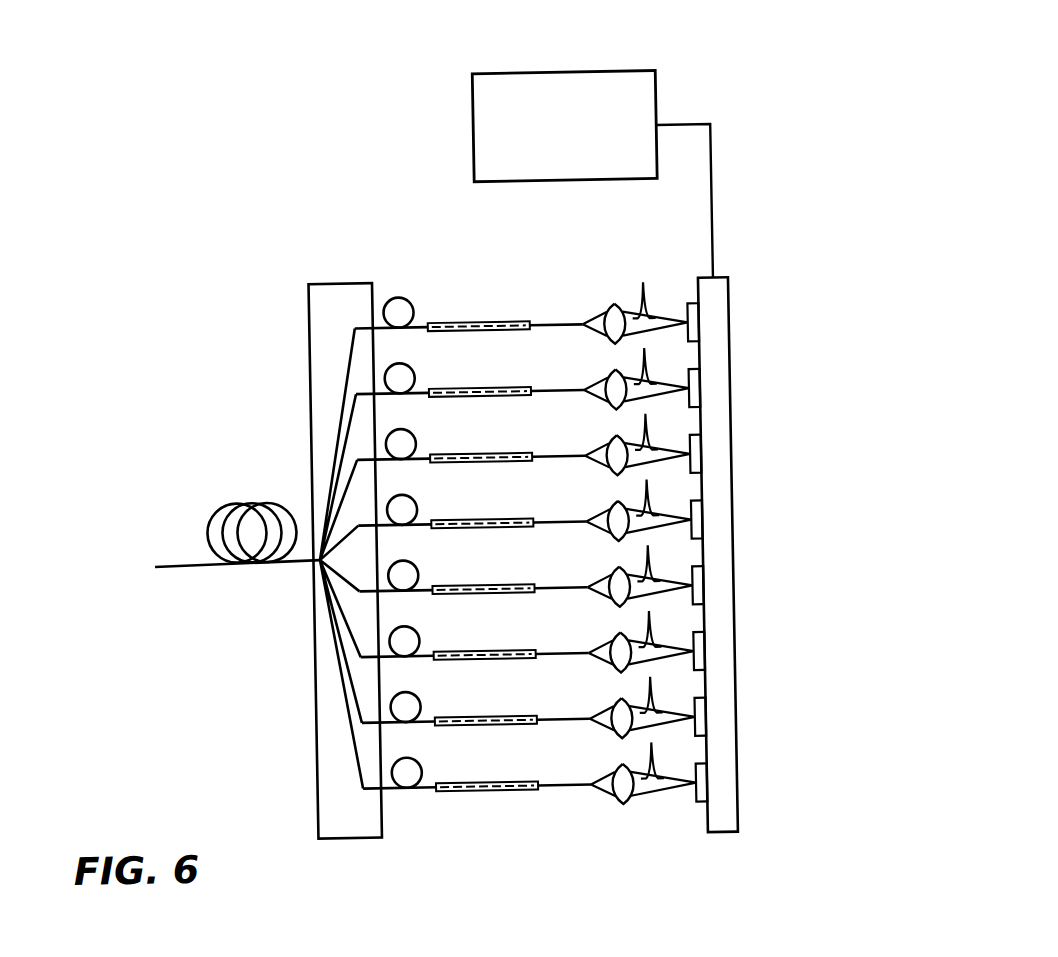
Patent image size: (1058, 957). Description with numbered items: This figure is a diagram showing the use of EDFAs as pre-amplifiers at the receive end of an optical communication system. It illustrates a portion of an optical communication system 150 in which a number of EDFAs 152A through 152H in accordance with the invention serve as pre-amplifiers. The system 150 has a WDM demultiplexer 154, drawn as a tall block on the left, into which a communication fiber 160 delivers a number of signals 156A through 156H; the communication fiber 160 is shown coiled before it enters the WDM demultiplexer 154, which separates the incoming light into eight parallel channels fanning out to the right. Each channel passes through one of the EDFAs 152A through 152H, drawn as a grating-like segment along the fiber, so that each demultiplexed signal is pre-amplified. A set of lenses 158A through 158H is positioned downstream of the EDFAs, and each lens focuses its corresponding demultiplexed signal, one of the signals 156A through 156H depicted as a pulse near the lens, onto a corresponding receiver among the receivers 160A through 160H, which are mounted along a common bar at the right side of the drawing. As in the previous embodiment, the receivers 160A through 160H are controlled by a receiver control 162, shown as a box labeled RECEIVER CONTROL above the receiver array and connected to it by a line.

The optical communication system 150 is at (241, 92).
The EDFA 152A is at (474, 319).
The EDFA 152H is at (497, 792).
The WDM demultiplexer 154 is at (312, 316).
The signal 156A is at (645, 297).
The signal 156H is at (647, 782).
The lens 158A is at (619, 307).
The lens 158H is at (616, 806).
The communication fiber 160 is at (233, 455).
The receiver 160A is at (692, 310).
The receiver 160H is at (698, 806).
The receiver control 162 is at (572, 73).